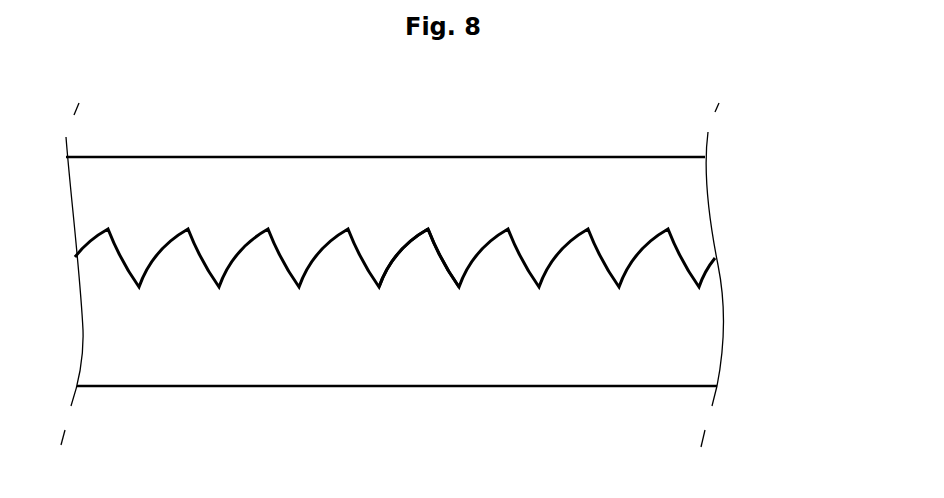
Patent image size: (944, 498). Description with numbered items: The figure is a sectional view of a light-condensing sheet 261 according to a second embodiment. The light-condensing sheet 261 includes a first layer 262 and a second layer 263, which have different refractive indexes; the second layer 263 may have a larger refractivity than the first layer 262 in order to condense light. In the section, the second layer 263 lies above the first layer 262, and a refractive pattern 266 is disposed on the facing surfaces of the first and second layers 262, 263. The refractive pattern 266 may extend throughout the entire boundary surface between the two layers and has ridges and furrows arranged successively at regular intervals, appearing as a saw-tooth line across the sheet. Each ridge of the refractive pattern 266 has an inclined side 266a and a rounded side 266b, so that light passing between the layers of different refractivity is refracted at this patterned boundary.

The light-condensing sheet 261 is at (812, 185).
The first layer 262 is at (698, 323).
The second layer 263 is at (698, 198).
The refractive pattern 266 is at (468, 335).
The inclined side 266a is at (437, 267).
The rounded side 266b is at (402, 267).